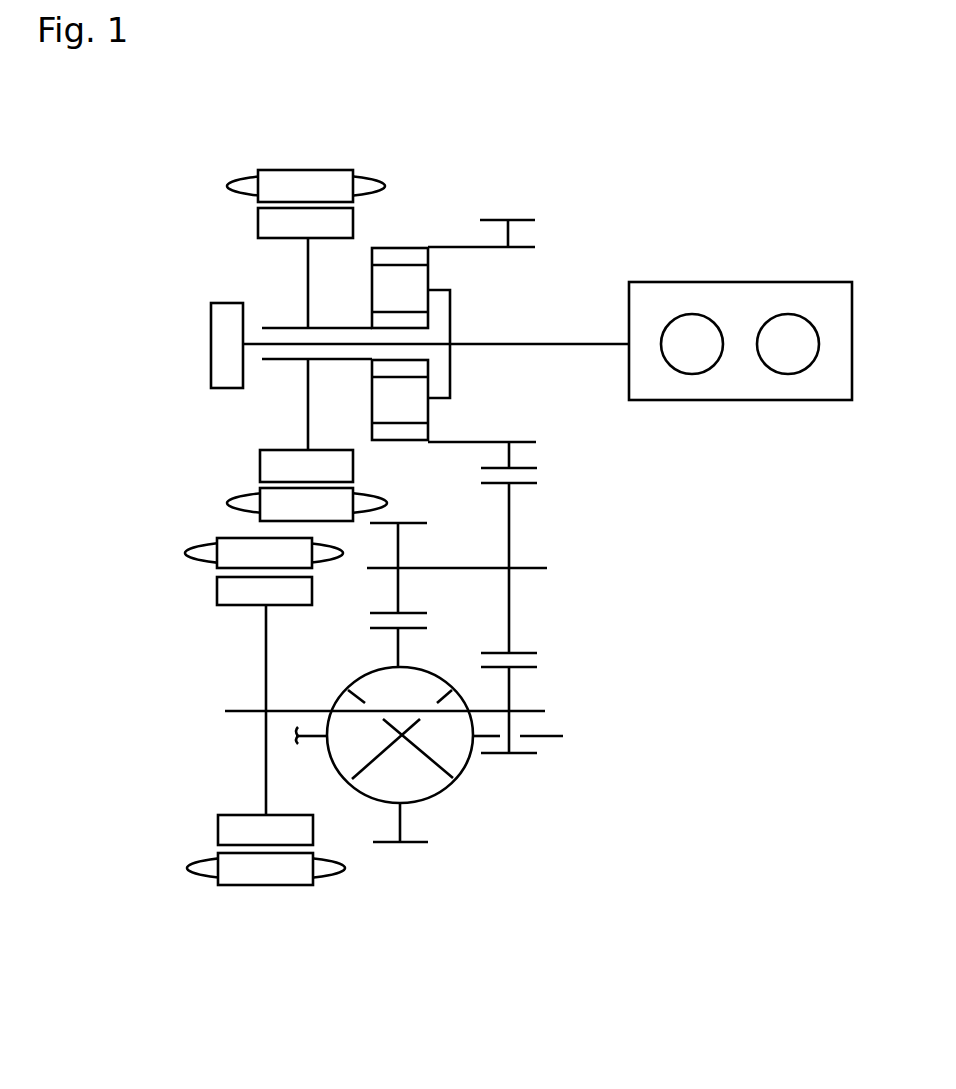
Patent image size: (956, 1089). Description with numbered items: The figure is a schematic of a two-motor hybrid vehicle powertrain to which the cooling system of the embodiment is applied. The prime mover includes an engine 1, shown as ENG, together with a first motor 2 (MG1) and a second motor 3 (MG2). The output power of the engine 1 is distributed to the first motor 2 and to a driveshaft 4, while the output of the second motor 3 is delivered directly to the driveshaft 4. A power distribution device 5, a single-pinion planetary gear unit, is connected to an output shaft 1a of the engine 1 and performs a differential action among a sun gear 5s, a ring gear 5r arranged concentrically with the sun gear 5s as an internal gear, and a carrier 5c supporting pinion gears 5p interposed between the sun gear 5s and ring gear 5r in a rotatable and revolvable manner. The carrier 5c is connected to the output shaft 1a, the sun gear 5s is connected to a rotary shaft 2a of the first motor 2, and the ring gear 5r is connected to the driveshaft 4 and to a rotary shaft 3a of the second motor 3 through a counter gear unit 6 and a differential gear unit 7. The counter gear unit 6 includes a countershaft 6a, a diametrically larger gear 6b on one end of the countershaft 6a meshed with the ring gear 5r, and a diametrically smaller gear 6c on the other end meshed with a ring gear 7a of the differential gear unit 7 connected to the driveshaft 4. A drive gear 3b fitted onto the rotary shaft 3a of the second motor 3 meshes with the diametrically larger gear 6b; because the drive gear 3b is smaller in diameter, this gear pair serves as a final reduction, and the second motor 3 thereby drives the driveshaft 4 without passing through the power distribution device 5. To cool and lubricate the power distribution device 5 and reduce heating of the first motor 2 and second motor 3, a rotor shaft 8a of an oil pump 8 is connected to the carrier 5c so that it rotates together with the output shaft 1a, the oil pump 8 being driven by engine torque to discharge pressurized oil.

The engine 1 is at (745, 400).
The output shaft 1a is at (583, 343).
The first motor 2 is at (272, 332).
The rotary shaft 2a is at (276, 361).
The second motor 3 is at (355, 727).
The rotary shaft 3a is at (305, 709).
The drive gear 3b is at (520, 755).
The driveshaft 4 is at (553, 738).
The power distribution device 5 is at (399, 292).
The ring gear 5r is at (450, 246).
The pinion gears 5p is at (410, 266).
The carrier 5c is at (452, 312).
The sun gear 5s is at (348, 328).
The counter gear unit 6 is at (489, 563).
The countershaft 6a is at (466, 567).
The diametrically larger gear 6b is at (522, 483).
The diametrically smaller gear 6c is at (408, 523).
The differential gear unit 7 is at (432, 800).
The ring gear 7a is at (410, 845).
The oil pump 8 is at (224, 390).
The rotor shaft 8a is at (263, 325).